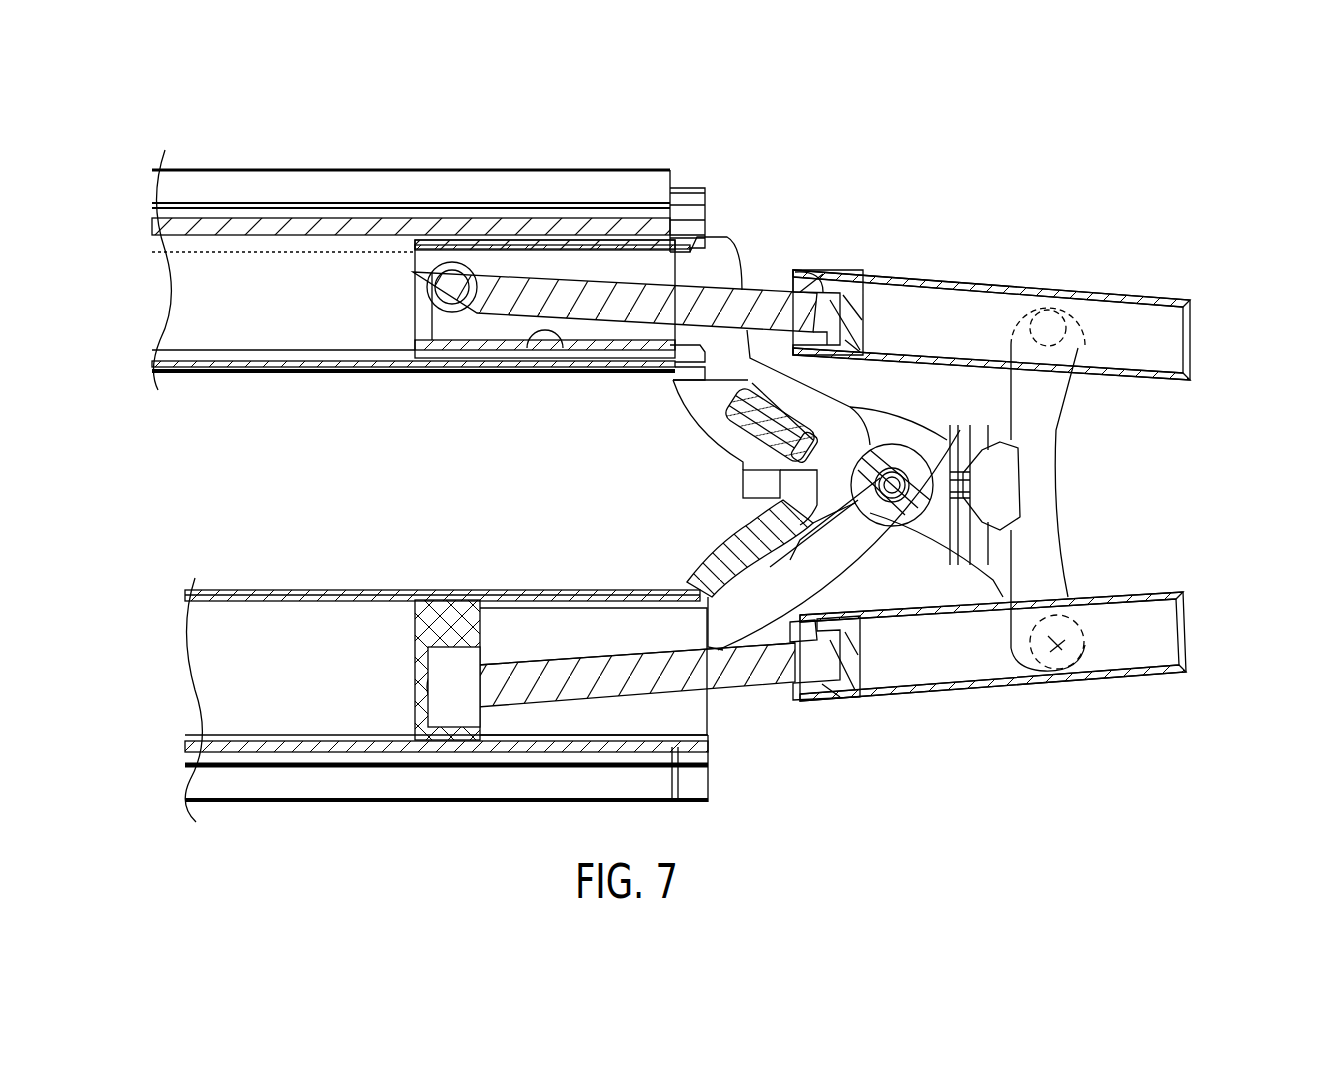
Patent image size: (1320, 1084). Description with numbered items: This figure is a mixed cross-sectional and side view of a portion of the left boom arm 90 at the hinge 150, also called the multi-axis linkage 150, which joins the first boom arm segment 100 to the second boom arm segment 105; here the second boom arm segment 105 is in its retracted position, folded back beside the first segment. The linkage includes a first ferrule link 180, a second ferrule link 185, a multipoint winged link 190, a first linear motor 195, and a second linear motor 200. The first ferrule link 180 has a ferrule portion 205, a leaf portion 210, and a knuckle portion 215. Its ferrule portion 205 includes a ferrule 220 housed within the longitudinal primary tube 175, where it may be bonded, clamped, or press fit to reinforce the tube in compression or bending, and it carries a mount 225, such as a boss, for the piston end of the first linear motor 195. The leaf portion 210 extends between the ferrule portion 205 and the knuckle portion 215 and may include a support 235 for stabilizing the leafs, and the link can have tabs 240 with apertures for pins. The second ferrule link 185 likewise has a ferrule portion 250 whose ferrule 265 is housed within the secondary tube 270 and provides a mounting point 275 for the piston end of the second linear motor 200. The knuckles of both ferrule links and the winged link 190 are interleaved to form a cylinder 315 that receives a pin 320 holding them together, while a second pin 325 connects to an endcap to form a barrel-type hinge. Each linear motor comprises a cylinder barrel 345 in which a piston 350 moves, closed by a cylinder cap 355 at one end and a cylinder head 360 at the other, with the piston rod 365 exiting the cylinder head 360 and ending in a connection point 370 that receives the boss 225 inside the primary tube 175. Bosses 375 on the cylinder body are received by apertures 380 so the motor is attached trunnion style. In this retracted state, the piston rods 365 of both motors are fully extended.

The left boom arm 90 is at (630, 165).
The first boom arm segment 100 is at (242, 596).
The second boom arm segment 105 is at (245, 352).
The hinge (multi-axis linkage) 150 is at (1112, 530).
The longitudinal tube (primary tube) 175 is at (307, 745).
The first ferrule link 180 is at (445, 620).
The second ferrule link 185 is at (700, 232).
The multipoint winged link 190 is at (1045, 510).
The first linear motor 195 is at (986, 668).
The second linear motor 200 is at (846, 300).
The ferrule portion 205 is at (582, 738).
The leaf portion 210 is at (860, 548).
The knuckle portion 215 is at (888, 452).
The ferrule 220 is at (430, 355).
The mount (connection point, boss) 225 is at (440, 688).
The support 235 is at (722, 255).
The tab 240 is at (680, 578).
The ferrule portion 250 is at (458, 352).
The ferrule 265 is at (558, 358).
The longitudinal tube (secondary tube) 270 is at (300, 373).
The mounting point 275 is at (440, 298).
The cylinder (interleave cylinder) 315 is at (800, 535).
The pin 320 is at (894, 482).
The second pin 325 is at (750, 482).
The cylinder barrel 345 is at (1132, 592).
The piston 350 is at (848, 662).
The cylinder cap 355 is at (1188, 620).
The cylinder head 360 is at (802, 630).
The piston rod 365 is at (725, 690).
The connection point 370 is at (487, 662).
The boss (connection point) 375 is at (1067, 636).
The aperture 380 is at (1076, 668).